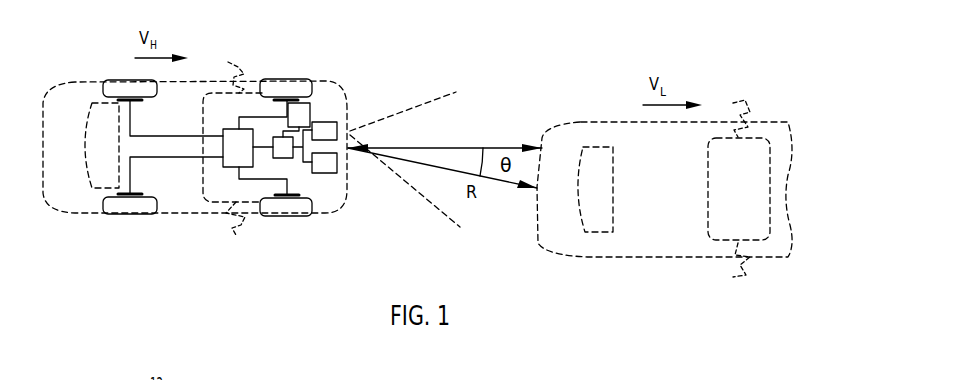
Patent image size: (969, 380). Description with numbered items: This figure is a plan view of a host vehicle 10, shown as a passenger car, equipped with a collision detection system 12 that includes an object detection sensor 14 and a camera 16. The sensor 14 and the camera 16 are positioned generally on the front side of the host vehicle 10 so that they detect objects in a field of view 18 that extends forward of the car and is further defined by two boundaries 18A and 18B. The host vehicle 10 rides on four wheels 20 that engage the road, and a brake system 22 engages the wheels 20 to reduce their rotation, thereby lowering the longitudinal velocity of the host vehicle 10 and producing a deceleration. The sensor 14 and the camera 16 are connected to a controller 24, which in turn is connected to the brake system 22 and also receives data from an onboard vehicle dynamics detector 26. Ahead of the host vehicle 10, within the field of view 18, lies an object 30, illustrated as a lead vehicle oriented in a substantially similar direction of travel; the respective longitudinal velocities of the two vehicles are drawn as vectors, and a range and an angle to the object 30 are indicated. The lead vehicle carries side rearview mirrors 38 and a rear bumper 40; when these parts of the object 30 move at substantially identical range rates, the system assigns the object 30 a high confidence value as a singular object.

The host vehicle 10 is at (204, 68).
The collision detection system 12 is at (348, 129).
The object detection sensor 14 is at (325, 174).
The camera 16 is at (328, 121).
The field of view 18 is at (417, 161).
The boundary 18A is at (450, 95).
The boundary 18B is at (433, 217).
The wheels 20 is at (117, 79).
The brake system 22 is at (223, 163).
The controller 24 is at (287, 159).
The vehicle dynamics detector 26 is at (311, 110).
The object 30 is at (664, 185).
The side rearview mirrors 38 is at (747, 102).
The rear bumper 40 is at (543, 250).